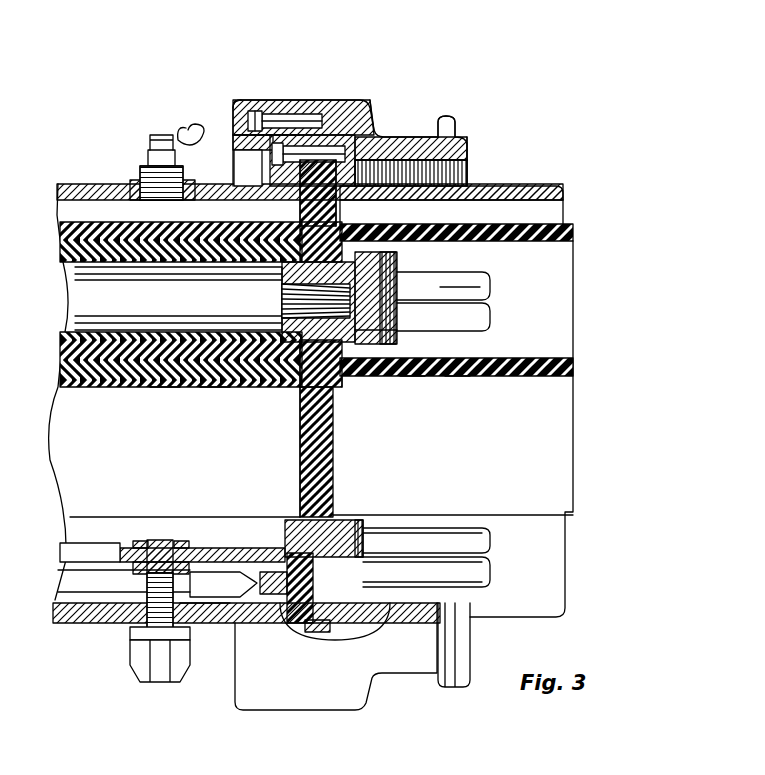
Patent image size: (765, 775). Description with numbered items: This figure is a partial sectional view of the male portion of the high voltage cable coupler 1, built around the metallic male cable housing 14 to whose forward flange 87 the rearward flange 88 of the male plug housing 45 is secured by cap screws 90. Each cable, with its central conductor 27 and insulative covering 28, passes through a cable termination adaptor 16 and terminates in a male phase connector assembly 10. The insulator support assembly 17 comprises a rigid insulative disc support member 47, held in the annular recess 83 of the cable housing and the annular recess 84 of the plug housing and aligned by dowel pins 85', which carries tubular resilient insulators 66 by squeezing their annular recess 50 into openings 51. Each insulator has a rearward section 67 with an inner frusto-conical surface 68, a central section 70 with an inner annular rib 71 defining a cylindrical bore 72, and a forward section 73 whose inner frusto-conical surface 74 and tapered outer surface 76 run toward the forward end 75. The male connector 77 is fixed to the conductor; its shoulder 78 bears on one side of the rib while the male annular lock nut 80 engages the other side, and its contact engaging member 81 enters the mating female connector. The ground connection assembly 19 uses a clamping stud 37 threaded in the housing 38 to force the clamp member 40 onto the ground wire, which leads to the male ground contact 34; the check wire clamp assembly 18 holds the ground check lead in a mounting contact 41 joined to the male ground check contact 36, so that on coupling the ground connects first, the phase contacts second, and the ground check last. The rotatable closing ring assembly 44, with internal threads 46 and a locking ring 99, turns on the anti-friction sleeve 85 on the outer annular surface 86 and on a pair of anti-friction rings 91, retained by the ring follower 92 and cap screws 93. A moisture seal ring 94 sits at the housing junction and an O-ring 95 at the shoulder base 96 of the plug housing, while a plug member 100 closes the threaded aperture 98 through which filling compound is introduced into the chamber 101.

The high voltage cable coupler 1 is at (102, 184).
The male phase contact or connector assembly 10 is at (447, 312).
The male cable housing 14 is at (232, 185).
The cable termination adaptor 16 is at (188, 336).
The insulator support assembly 17 is at (333, 392).
The check wire clamp assembly 18 is at (258, 600).
The ground connection assembly 19 is at (195, 632).
The central conductor 27 is at (350, 300).
The insulative covering 28 is at (225, 292).
The male ground contact 34 is at (478, 579).
The male ground check contact 36 is at (372, 600).
The clamping stud 37 is at (155, 660).
The housing 38 is at (196, 603).
The clamp member 40 is at (200, 565).
The mounting contact 41 is at (290, 605).
The rotatable ring assembly 44 is at (470, 148).
The male plug housing 45 is at (535, 190).
The threads 46 is at (470, 172).
The disc-shaped support member 47 is at (298, 478).
The annular recess 50 is at (375, 213).
The opening 51 is at (302, 193).
The tubular resilient insulator 66 is at (185, 387).
The rearward section 67 is at (160, 387).
The inner frusto-conical surface 68 is at (216, 387).
The central section 70 is at (356, 386).
The inner annular rib 71 is at (385, 262).
The cylindrical bore 72 is at (356, 330).
The forward section 73 is at (455, 372).
The inner frusto-conical surface 74 is at (500, 360).
The forward end 75 is at (573, 232).
The outer surface 76 is at (415, 377).
The male connector 77 is at (287, 387).
The base or shoulder 78 is at (262, 387).
The male annular lock nut 80 is at (397, 334).
The contact engaging member 81 is at (480, 285).
The annular shoulder or recess 83 is at (284, 193).
The shoulder or annular recess 84 is at (338, 218).
The anti-friction ring or sleeve 85 is at (312, 107).
The dowel pin 85' is at (327, 648).
The outer annular surface 86 is at (340, 146).
The forward flange 87 is at (235, 115).
The rearward flange 88 is at (360, 150).
The cap screws 90 is at (300, 130).
The anti-friction rings 91 is at (240, 116).
The ring follower 92 is at (240, 100).
The cap screws 93 is at (255, 111).
The moisture seal ring 94 is at (345, 130).
The O-ring 95 is at (388, 160).
The shoulder base 96 is at (378, 140).
The threaded aperture 98 is at (183, 168).
The locking ring 99 is at (456, 126).
The plug member 100 is at (150, 162).
The chamber 101 is at (255, 168).